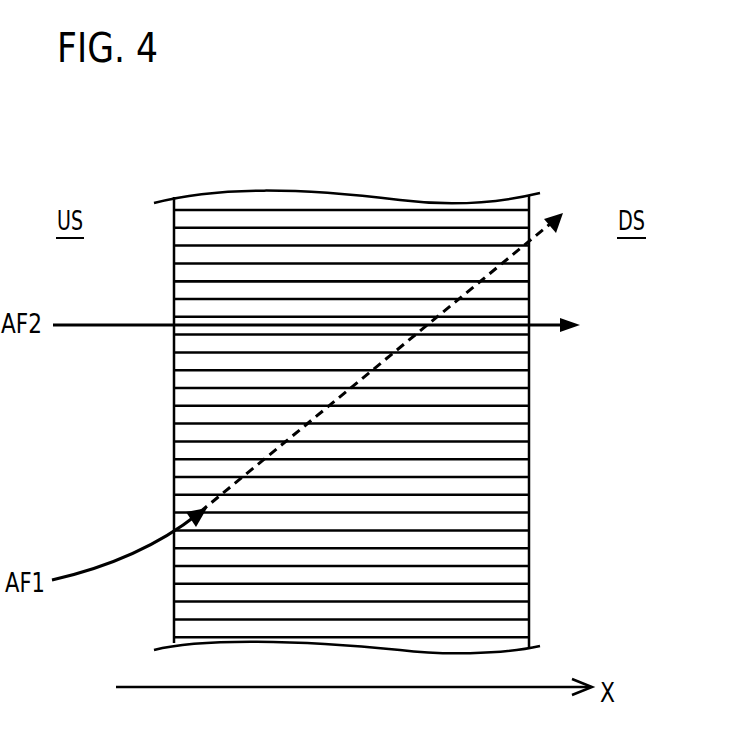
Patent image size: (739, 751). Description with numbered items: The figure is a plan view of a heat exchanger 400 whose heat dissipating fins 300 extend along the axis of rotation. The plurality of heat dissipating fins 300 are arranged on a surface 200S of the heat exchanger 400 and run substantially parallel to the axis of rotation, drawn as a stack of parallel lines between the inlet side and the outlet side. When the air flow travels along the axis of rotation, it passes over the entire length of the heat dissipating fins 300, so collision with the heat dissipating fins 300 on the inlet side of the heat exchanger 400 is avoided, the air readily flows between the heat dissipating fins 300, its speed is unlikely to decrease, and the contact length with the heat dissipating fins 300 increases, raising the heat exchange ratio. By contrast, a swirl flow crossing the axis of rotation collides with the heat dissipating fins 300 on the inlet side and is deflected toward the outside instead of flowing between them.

The heat exchanger 400 is at (372, 152).
The surface of the heat exchanger 200S is at (513, 290).
The heat dissipating fins 300 is at (508, 387).